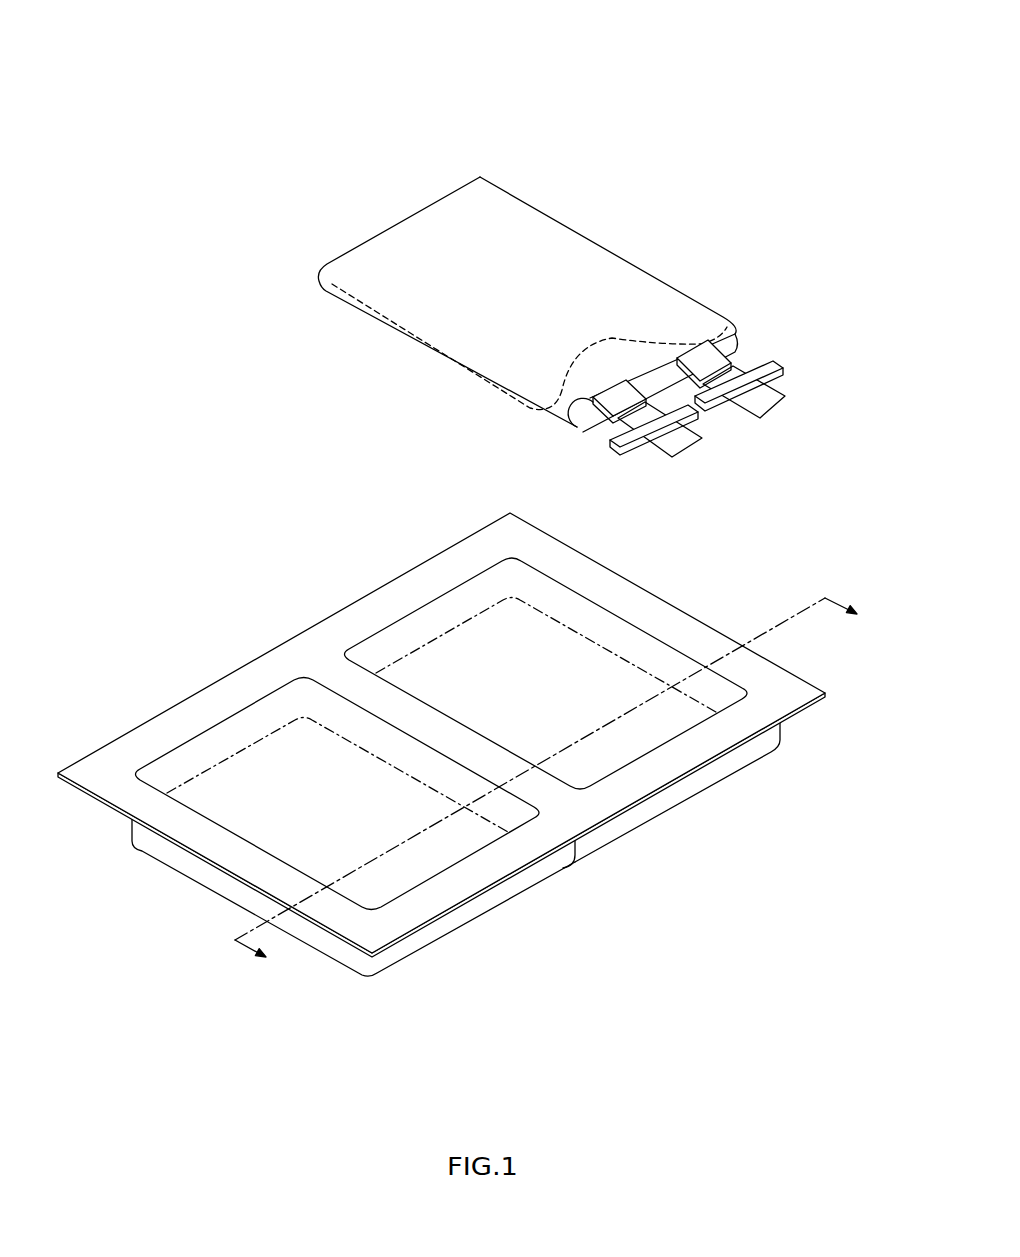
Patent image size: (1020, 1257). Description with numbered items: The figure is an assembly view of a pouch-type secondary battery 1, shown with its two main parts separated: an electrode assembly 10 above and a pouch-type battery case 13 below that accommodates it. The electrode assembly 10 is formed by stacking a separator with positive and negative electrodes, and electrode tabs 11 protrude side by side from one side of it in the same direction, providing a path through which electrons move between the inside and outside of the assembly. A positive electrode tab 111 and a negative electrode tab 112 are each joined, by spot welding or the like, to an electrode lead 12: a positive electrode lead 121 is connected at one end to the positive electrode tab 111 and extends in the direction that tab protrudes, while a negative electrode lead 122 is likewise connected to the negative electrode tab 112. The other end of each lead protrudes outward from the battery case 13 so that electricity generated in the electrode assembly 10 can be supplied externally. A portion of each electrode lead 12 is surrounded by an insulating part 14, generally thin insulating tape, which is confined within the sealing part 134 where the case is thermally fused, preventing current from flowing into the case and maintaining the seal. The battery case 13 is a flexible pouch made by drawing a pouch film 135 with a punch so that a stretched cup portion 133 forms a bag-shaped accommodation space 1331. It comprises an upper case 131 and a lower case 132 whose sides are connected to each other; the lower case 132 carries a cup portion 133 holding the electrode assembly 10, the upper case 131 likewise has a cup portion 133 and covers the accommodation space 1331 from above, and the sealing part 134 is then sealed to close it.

The pouch-type secondary battery 1 is at (478, 78).
The electrode assembly 10 is at (673, 221).
The electrode tab 11 is at (448, 443).
The positive electrode tab 111 is at (612, 398).
The negative electrode tab 112 is at (593, 403).
The electrode lead 12 is at (838, 462).
The positive electrode lead 121 is at (772, 404).
The negative electrode lead 122 is at (688, 445).
The battery case 13 is at (790, 851).
The upper case 131 is at (487, 873).
The lower case 132 is at (705, 753).
The cup portion 133 is at (193, 868).
The accommodation space 1331 is at (405, 873).
The sealing part 134 is at (572, 827).
The pouch film 135 is at (300, 632).
The insulating part 14 is at (668, 420).